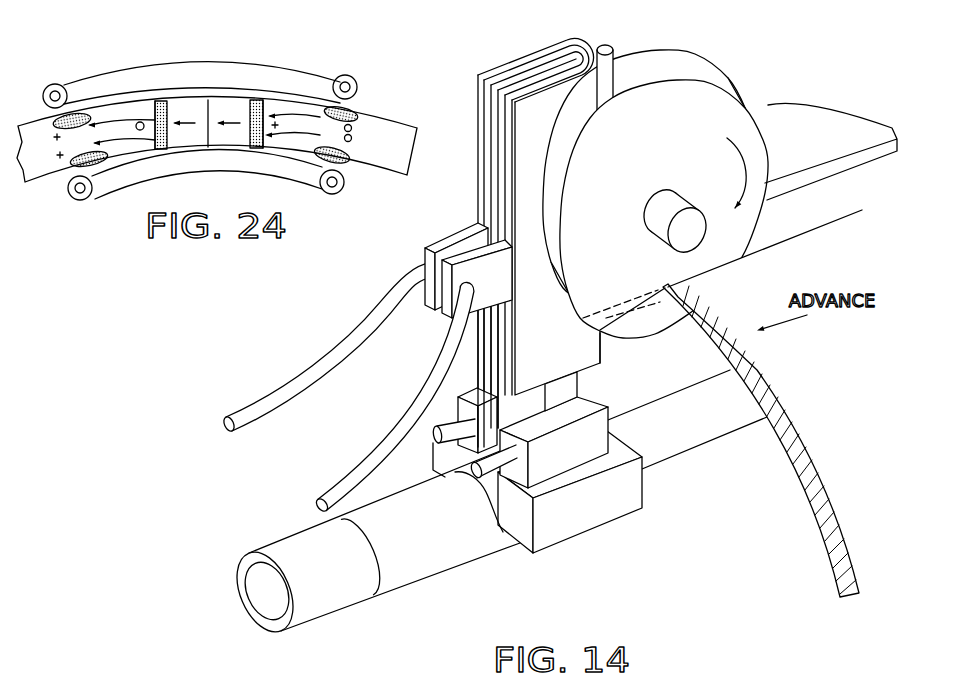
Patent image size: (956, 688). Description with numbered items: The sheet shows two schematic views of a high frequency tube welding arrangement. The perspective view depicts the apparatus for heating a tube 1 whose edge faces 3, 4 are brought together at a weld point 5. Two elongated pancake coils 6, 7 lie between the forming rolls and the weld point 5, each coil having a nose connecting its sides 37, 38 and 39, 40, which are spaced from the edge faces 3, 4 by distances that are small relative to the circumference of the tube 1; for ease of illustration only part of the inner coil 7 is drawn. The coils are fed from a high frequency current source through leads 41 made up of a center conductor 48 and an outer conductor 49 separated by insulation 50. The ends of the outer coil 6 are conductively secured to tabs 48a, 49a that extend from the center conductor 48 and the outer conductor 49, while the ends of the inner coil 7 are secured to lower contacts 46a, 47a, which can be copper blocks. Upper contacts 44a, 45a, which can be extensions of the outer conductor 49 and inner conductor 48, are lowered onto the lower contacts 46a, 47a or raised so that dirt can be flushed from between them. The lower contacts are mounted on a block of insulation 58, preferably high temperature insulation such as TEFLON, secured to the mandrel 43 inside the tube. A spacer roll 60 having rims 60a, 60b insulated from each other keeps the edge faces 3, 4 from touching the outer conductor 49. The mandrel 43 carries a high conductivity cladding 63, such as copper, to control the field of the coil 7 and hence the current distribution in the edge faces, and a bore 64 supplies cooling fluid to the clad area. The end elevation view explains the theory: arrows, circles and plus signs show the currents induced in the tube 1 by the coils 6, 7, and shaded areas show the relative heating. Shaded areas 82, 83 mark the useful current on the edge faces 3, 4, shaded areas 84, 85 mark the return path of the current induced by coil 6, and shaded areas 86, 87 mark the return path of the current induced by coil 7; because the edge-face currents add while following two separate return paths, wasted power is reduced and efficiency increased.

In FIG. 24, the tube 1 is at (393, 123).
In FIG. 14, the tube 1 is at (830, 125).
In FIG. 24, the edge face 3 is at (168, 100).
In FIG. 24, the edge face 4 is at (251, 100).
In FIG. 24, the weld point 5 is at (212, 108).
In FIG. 24, the pancake coil 6 is at (147, 62).
In FIG. 14, the pancake coil 6 is at (274, 387).
In FIG. 24, the pancake coil 7 is at (305, 195).
In FIG. 24, the shaded area 82 is at (168, 138).
In FIG. 24, the shaded area 83 is at (250, 133).
In FIG. 24, the shaded area 84 is at (78, 112).
In FIG. 24, the shaded area 85 is at (332, 108).
In FIG. 24, the shaded area 86 is at (94, 166).
In FIG. 24, the shaded area 87 is at (342, 162).
In FIG. 14, the side 37 is at (378, 452).
In FIG. 14, the side 38 is at (343, 338).
In FIG. 14, the side 39 is at (485, 467).
In FIG. 14, the side 40 is at (435, 442).
In FIG. 14, the leads 41 is at (551, 42).
In FIG. 14, the mandrel 43 is at (432, 557).
In FIG. 14, the upper contact 44a is at (572, 383).
In FIG. 14, the upper contact 45a is at (482, 358).
In FIG. 14, the lower contact 46a is at (458, 403).
In FIG. 14, the lower contact 47a is at (605, 423).
In FIG. 14, the center conductor 48 is at (522, 77).
In FIG. 14, the tab 48a is at (467, 230).
In FIG. 14, the outer conductor 49 is at (570, 45).
In FIG. 14, the tab 49a is at (508, 276).
In FIG. 14, the insulation 50 is at (602, 43).
In FIG. 14, the block of insulation 58 is at (588, 523).
In FIG. 14, the spacer roll 60 is at (676, 72).
In FIG. 14, the rim 60a is at (653, 53).
In FIG. 14, the rim 60b is at (708, 88).
In FIG. 14, the high conductivity cladding 63 is at (330, 603).
In FIG. 14, the bore 64 is at (258, 605).